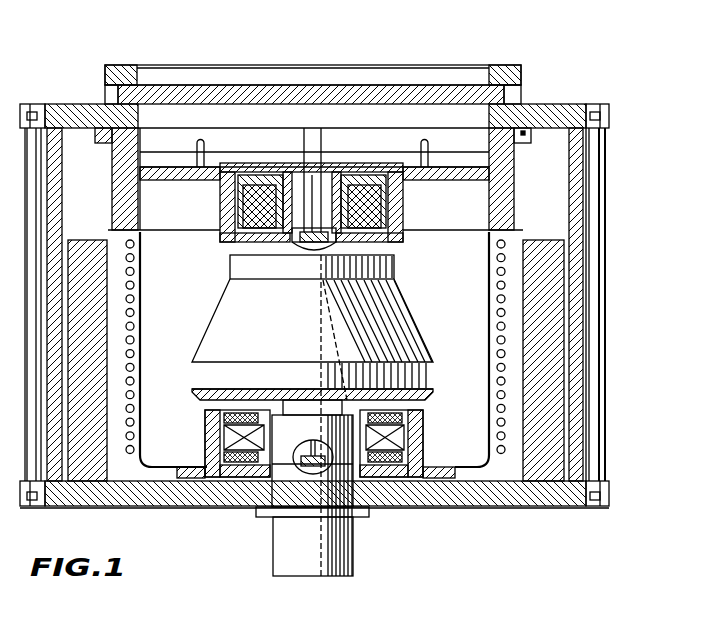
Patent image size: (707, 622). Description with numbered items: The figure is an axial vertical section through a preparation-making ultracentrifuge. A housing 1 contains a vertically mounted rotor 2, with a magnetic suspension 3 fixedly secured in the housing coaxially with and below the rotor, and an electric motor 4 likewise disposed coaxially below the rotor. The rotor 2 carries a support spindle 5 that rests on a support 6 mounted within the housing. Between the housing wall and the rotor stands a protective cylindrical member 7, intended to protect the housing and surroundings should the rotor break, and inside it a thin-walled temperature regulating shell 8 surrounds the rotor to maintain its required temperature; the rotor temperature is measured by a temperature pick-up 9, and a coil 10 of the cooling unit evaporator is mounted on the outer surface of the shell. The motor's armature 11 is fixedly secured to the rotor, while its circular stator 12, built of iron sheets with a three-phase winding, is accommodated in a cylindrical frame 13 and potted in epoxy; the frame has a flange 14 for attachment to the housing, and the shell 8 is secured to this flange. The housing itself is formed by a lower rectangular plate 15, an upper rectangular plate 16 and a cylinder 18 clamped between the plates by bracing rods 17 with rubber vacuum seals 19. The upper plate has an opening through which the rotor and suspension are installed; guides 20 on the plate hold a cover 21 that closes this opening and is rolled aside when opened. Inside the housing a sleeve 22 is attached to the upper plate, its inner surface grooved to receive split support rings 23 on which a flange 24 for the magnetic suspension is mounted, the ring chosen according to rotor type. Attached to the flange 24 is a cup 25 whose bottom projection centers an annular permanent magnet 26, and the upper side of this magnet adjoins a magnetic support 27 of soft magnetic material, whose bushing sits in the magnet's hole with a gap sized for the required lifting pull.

The housing 1 is at (590, 70).
The rotor 2 is at (398, 318).
The magnetic suspension 3 is at (222, 166).
The electric motor 4 is at (438, 453).
The support spindle 5 is at (307, 452).
The support 6 is at (361, 536).
The protective cylindrical member 7 is at (543, 246).
The temperature regulating shell 8 is at (492, 372).
The temperature pick-up 9 is at (335, 163).
The coil 10 is at (497, 285).
The armature 11 is at (276, 455).
The stator 12 is at (412, 430).
The cylindrical frame 13 is at (203, 412).
The flange 14 is at (183, 466).
The lower rectangular plate 15 is at (563, 497).
The upper rectangular plate 16 is at (75, 107).
The bracing rods 17 is at (606, 418).
The cylinder 18 is at (578, 146).
The rubber vacuum seals 19 is at (578, 492).
The guides 20 is at (500, 68).
The cover 21 is at (372, 92).
The sleeve 22 is at (520, 142).
The split support rings 23 is at (135, 160).
The flange 24 is at (137, 176).
The cup 25 is at (220, 240).
The annular permanent magnet 26 is at (396, 243).
The magnetic support 27 is at (363, 182).